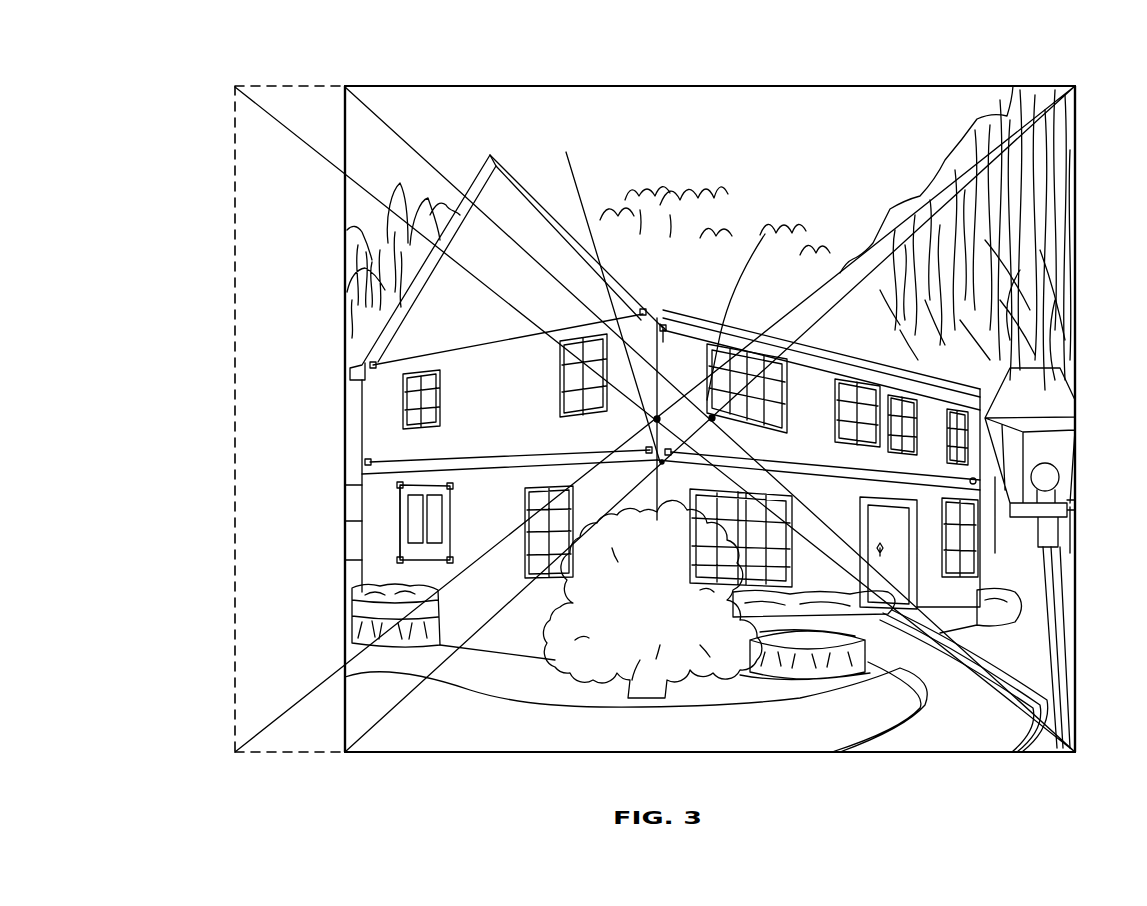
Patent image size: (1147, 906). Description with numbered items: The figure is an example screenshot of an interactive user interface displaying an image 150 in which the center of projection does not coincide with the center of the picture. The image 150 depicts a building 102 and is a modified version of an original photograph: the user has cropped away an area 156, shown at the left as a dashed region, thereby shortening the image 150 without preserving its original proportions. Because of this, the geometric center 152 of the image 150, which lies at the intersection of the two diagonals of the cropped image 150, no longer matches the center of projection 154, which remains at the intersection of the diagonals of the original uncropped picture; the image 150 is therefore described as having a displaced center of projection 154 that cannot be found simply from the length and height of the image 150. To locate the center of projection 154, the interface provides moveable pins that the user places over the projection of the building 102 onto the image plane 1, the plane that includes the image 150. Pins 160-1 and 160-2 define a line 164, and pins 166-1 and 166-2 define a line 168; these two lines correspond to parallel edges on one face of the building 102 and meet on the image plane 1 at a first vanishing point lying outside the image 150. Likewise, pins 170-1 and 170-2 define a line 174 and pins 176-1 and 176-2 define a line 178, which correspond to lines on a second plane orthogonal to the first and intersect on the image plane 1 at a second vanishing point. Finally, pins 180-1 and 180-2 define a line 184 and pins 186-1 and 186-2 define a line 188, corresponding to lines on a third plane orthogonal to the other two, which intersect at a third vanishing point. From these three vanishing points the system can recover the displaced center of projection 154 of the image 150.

The image plane I 1 is at (822, 50).
The building 102 is at (532, 170).
The image 150 is at (990, 85).
The geometric center 152 is at (745, 304).
The center of projection 154 is at (605, 296).
The area 156 is at (304, 112).
The moveable pin 160-1 is at (641, 308).
The moveable pin 160-2 is at (376, 363).
The line 164 is at (482, 362).
The moveable pin 166-1 is at (645, 449).
The moveable pin 166-2 is at (372, 461).
The line 168 is at (506, 458).
The moveable pin 170-1 is at (657, 416).
The moveable pin 170-2 is at (714, 415).
The line 174 is at (815, 352).
The moveable pin 176-1 is at (662, 464).
The moveable pin 176-2 is at (976, 480).
The line 178 is at (812, 467).
The moveable pin 180-1 is at (397, 485).
The moveable pin 180-2 is at (397, 560).
The line 184 is at (398, 521).
The moveable pin 186-1 is at (454, 486).
The moveable pin 186-2 is at (456, 562).
The line 188 is at (452, 520).